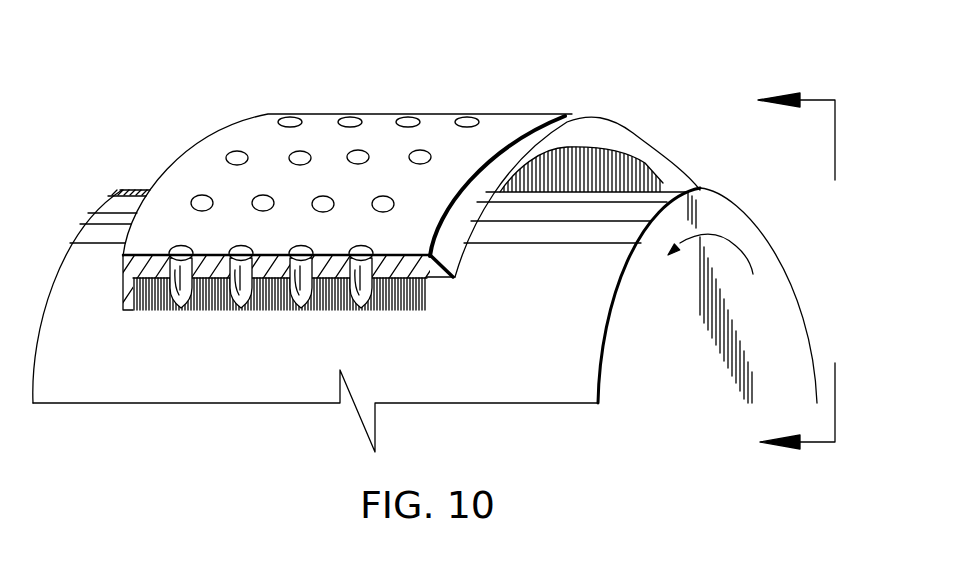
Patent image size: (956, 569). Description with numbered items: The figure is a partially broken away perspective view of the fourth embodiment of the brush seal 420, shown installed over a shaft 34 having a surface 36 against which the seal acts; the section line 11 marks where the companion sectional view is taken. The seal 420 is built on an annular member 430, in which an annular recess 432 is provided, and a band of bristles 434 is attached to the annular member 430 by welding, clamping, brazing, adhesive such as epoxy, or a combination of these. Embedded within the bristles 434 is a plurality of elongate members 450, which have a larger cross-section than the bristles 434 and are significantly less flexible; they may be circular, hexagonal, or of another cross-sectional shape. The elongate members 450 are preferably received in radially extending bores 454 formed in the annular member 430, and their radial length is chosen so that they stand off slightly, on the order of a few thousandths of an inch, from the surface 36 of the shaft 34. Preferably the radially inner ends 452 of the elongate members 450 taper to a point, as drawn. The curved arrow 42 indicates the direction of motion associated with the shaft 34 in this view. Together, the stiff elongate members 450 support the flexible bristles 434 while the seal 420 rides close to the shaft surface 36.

The surface 36 is at (443, 375).
The shaft 34 is at (793, 350).
The rotation direction arrow 42 is at (745, 262).
The brush seal 420 is at (660, 108).
The annular member 430 is at (577, 130).
The annular recess 432 is at (493, 208).
The bristles 434 is at (150, 313).
The elongate members 450 is at (331, 256).
The radially inner ends 452 is at (358, 285).
The radially extending bores 454 is at (207, 200).
The section line 11- 11 is at (802, 274).